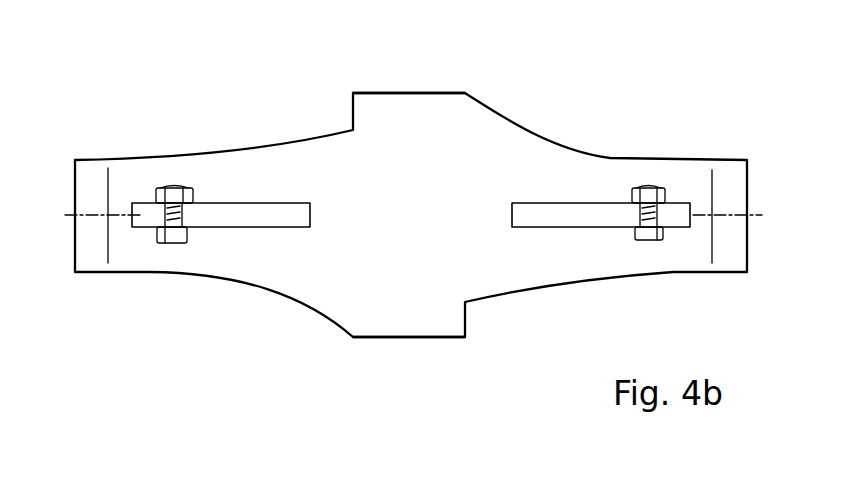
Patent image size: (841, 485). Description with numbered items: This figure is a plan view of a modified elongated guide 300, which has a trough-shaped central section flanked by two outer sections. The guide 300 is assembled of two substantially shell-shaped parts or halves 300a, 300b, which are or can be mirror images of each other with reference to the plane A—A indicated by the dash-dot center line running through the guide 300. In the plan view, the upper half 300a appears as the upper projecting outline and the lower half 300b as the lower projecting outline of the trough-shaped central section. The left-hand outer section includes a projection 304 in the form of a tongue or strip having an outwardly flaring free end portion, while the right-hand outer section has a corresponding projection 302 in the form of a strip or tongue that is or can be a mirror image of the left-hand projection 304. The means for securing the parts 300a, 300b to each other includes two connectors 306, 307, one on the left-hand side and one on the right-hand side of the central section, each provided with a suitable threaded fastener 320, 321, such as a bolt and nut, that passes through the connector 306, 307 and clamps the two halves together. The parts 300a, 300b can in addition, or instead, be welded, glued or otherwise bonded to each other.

The elongated guide 300 is at (520, 104).
The shell-shaped part 300a is at (420, 117).
The shell-shaped part 300b is at (493, 280).
The projection 302 is at (730, 205).
The projection 304 is at (87, 175).
The connector 306 is at (228, 240).
The connector 307 is at (678, 196).
The threaded fastener 320 is at (170, 195).
The threaded fastener 321 is at (638, 240).